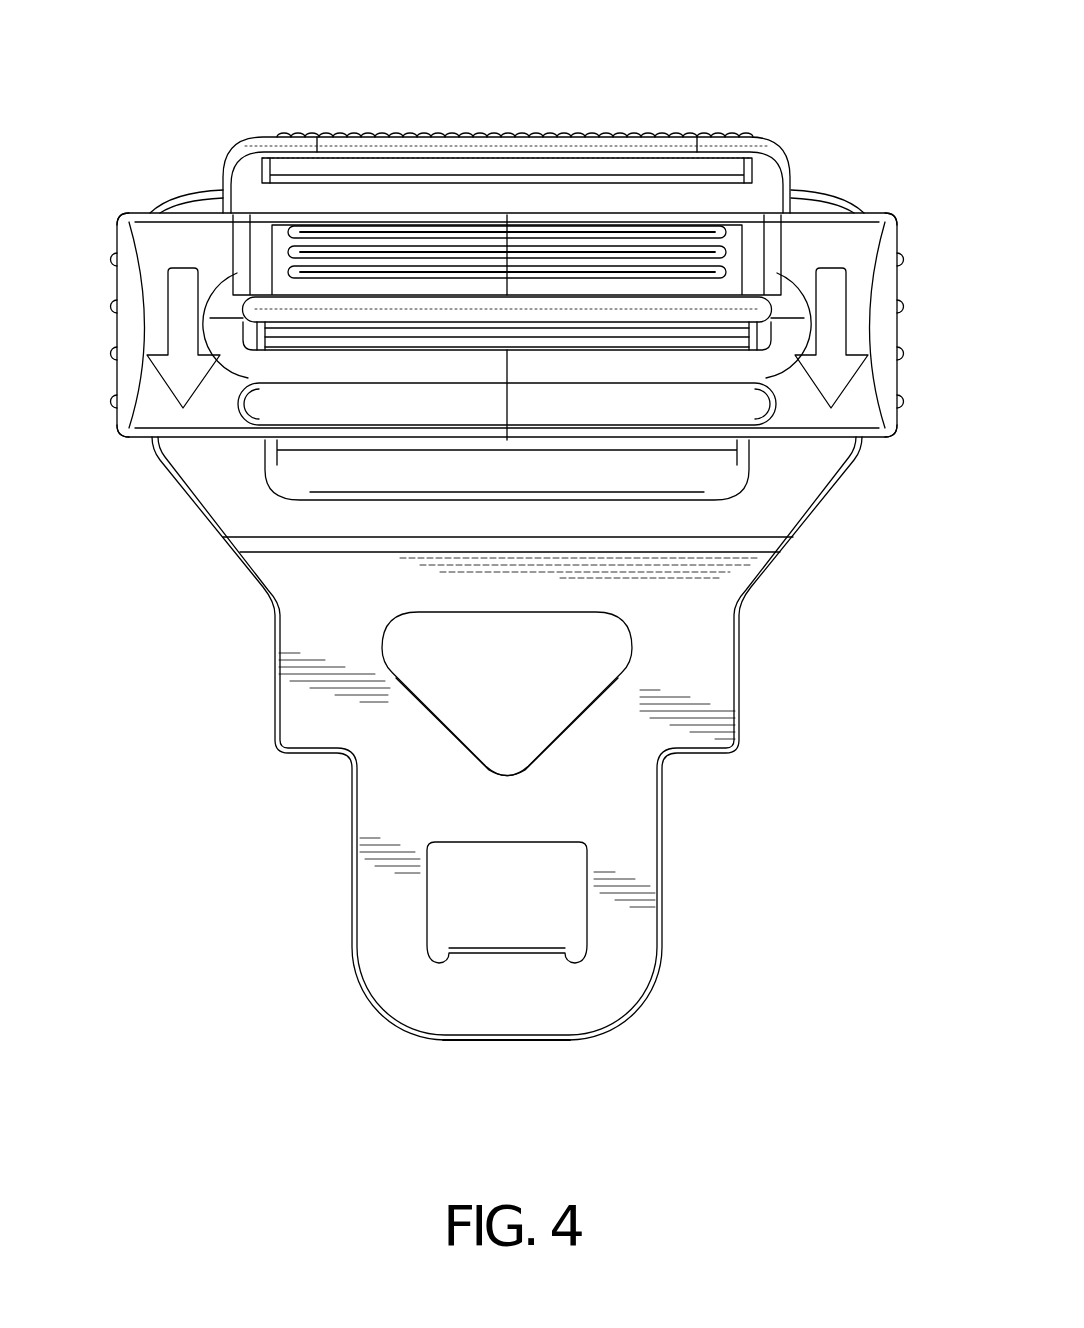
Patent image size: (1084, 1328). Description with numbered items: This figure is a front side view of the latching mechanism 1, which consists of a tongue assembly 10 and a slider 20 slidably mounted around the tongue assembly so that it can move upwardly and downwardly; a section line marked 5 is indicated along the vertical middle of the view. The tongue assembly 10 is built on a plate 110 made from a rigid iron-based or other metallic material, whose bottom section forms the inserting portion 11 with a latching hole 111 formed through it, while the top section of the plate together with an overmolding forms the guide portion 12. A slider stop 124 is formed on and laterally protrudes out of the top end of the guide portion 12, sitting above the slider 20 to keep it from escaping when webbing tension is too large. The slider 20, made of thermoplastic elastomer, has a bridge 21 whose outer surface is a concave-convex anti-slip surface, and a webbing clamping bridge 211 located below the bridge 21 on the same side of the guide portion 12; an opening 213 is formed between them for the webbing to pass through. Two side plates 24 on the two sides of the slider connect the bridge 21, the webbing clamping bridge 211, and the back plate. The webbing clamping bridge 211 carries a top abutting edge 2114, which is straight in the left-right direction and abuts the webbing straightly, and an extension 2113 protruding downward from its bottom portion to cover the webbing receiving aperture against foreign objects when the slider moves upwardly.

The latching mechanism 1 is at (170, 750).
The section line 5- 5 is at (507, 128).
The tongue assembly 10 is at (296, 792).
The inserting portion 11 is at (376, 1024).
The plate 110 is at (592, 786).
The latching hole 111 is at (580, 905).
The guide portion 12 is at (788, 130).
The slider stop 124 is at (711, 150).
The slider 20 is at (142, 196).
The bridge 21 is at (571, 290).
The webbing clamping bridge 211 is at (693, 366).
The extension 2113 is at (662, 472).
The top abutting edge 2114 is at (534, 340).
The opening 213 is at (388, 342).
The side plates 24 is at (118, 327).